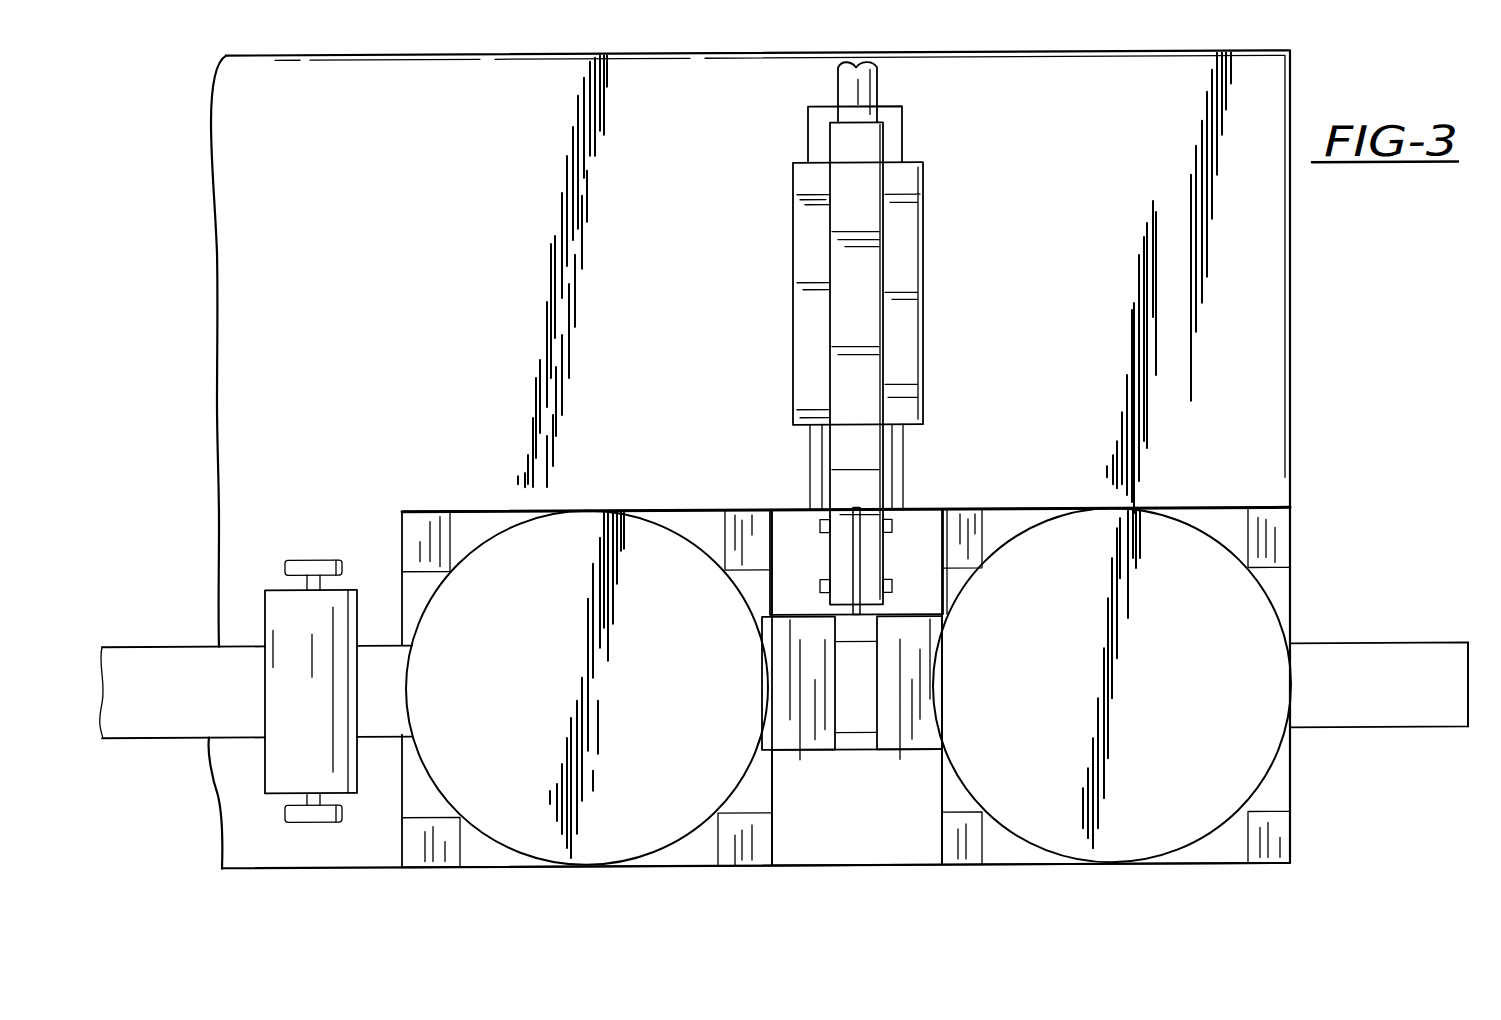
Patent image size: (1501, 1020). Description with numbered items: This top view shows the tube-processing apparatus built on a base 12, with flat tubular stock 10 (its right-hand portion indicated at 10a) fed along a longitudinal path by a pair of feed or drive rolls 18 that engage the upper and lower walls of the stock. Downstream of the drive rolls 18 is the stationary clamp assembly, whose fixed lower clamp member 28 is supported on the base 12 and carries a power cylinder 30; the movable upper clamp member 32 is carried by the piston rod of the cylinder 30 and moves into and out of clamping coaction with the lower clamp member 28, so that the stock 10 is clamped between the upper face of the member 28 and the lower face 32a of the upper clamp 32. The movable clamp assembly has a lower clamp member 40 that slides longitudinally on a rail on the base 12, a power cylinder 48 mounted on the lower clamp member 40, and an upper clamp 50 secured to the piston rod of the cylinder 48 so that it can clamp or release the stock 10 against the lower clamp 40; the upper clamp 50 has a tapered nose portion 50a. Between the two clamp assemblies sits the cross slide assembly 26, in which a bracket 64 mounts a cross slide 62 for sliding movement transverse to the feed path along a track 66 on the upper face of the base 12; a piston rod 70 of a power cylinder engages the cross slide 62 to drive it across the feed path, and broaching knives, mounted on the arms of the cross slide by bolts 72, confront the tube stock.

The flat tubular stock 10 is at (158, 656).
The shaft end 10a is at (1476, 714).
The base 12 is at (204, 764).
The feed or drive rolls 18 is at (275, 610).
The cross slide assembly 26 is at (928, 263).
The fixed lower clamp member 28 is at (410, 510).
The power cylinder 30 is at (515, 545).
The movable upper clamp member 32 is at (410, 588).
The lower face of upper clamp 32a is at (806, 740).
The lower clamp member 40 is at (1022, 508).
The power cylinder 48 is at (1195, 512).
The upper clamp 50 is at (1284, 602).
The tapered nose portion 50a is at (915, 735).
The cross slide 62 is at (887, 347).
The bracket 64 is at (793, 272).
The track 66 is at (815, 138).
The piston rod 70 is at (878, 92).
The bolts 72 is at (892, 528).